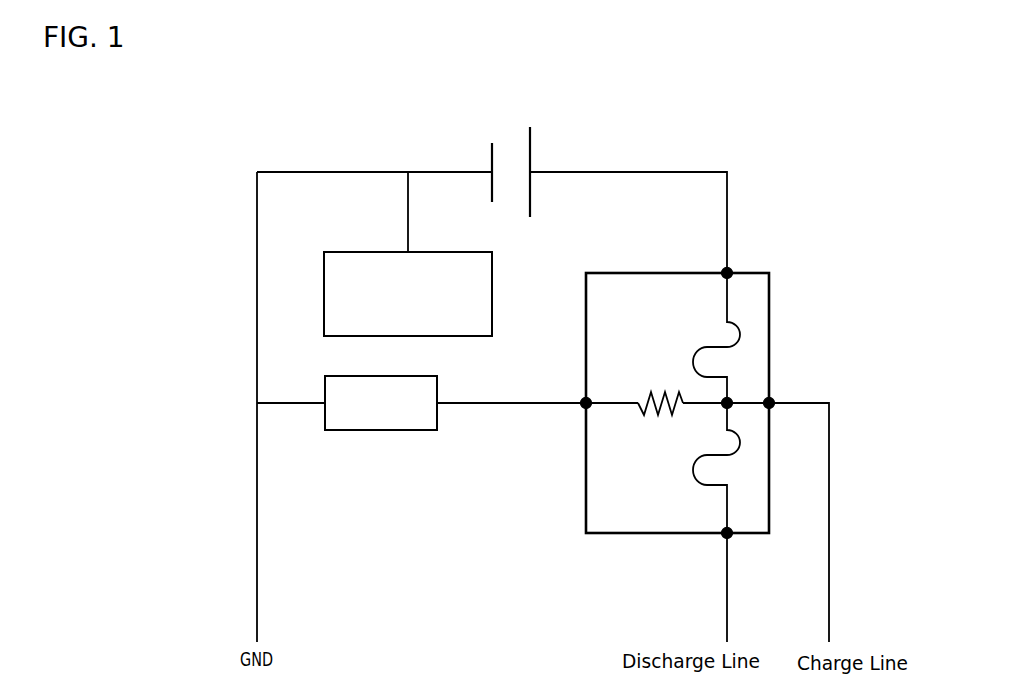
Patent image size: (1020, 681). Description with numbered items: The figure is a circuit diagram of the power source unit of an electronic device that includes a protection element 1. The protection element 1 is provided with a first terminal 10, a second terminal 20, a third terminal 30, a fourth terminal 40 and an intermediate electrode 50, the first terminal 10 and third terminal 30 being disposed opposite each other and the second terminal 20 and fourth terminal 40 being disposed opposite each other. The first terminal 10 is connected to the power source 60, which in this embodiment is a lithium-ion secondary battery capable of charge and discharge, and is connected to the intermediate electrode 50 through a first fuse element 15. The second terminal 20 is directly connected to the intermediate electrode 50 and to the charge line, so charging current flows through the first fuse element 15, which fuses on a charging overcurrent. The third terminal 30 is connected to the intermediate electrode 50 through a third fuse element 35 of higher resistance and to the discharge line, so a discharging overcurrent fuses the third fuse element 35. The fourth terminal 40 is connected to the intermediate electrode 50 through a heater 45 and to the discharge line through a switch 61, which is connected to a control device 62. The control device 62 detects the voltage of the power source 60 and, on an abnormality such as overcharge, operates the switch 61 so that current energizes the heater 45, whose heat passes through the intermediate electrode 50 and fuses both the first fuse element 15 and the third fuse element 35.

The protection element 1 is at (790, 272).
The first terminal 10 is at (731, 271).
The first fuse element 15 is at (741, 334).
The second terminal 20 is at (773, 402).
The third terminal 30 is at (724, 537).
The third fuse element 35 is at (696, 467).
The fourth terminal 40 is at (585, 407).
The heater 45 is at (658, 414).
The intermediate electrode 50 is at (731, 406).
The power source 60 is at (572, 143).
The switch 61 is at (378, 431).
The control device 62 is at (338, 251).